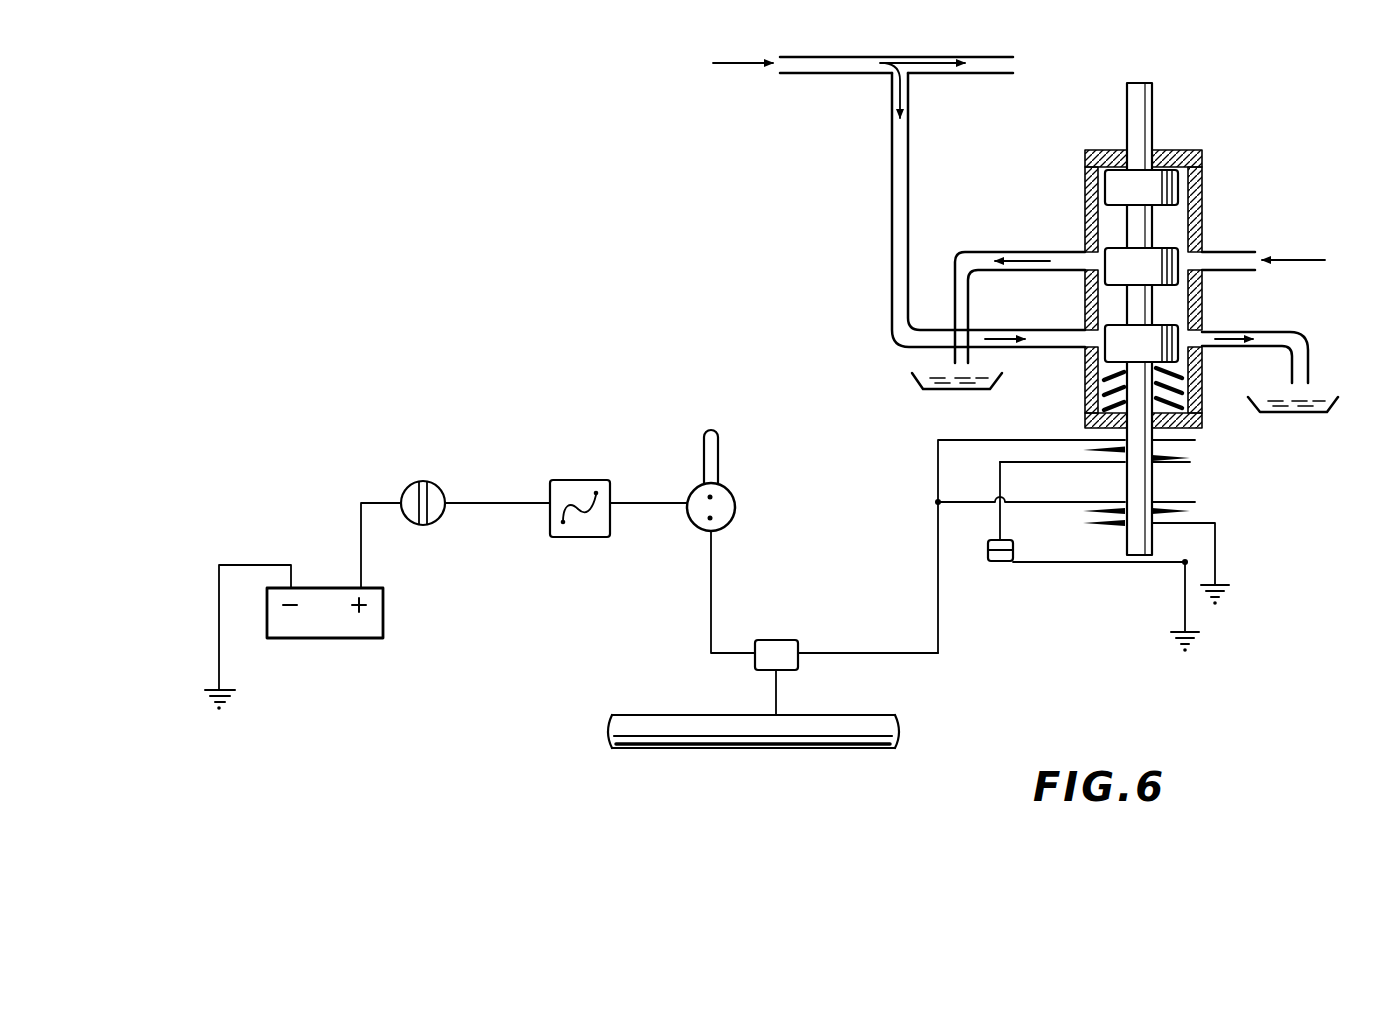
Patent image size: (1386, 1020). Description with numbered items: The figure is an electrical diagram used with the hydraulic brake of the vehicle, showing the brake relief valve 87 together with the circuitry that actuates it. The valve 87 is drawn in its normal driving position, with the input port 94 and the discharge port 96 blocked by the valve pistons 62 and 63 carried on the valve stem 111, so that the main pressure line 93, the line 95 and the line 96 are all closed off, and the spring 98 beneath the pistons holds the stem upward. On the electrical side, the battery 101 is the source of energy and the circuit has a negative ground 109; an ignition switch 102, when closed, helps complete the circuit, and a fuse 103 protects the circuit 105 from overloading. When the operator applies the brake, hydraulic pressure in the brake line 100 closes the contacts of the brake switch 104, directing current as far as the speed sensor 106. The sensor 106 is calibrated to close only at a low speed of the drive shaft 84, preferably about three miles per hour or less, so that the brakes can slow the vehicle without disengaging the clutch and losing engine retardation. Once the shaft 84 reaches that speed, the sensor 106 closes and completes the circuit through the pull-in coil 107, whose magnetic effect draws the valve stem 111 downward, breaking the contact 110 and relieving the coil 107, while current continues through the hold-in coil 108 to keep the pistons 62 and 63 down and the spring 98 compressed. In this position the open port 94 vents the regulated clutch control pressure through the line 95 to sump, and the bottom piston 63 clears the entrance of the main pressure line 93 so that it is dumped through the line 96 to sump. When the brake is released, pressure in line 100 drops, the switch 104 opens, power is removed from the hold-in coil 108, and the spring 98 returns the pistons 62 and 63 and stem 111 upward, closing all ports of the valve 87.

The valve piston 62 is at (1100, 283).
The valve piston 63 is at (1100, 345).
The drive shaft 84 is at (850, 746).
The brake relief valve 87 is at (1212, 302).
The main pressure line 93 is at (812, 74).
The input port 94 is at (1220, 249).
The line 95 is at (990, 249).
The discharge port 96 is at (1308, 350).
The spring 98 is at (1178, 400).
The brake line 100 is at (720, 470).
The battery 101 is at (331, 639).
The ignition switch 102 is at (431, 523).
The fuse 103 is at (581, 538).
The brake switch 104 is at (735, 510).
The electrical circuit 105 is at (713, 580).
The speed sensor 106 is at (782, 648).
The pull-in coil 107 is at (1190, 458).
The hold-in coil 108 is at (1192, 511).
The negative ground 109 is at (1228, 602).
The contact 110 is at (1000, 562).
The valve stem 111 is at (1125, 474).